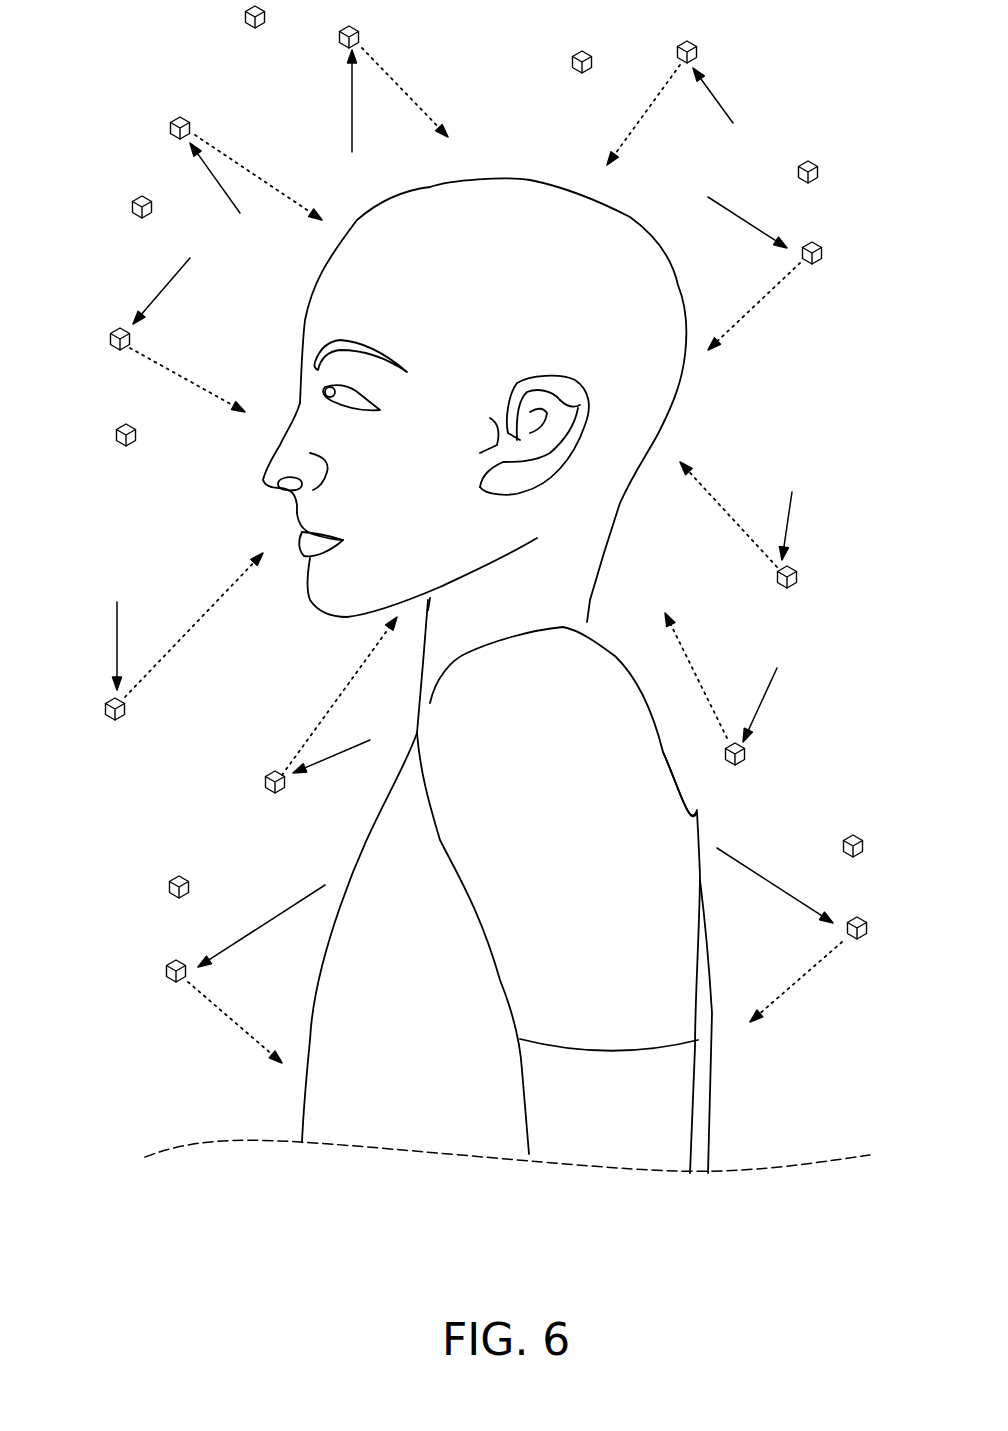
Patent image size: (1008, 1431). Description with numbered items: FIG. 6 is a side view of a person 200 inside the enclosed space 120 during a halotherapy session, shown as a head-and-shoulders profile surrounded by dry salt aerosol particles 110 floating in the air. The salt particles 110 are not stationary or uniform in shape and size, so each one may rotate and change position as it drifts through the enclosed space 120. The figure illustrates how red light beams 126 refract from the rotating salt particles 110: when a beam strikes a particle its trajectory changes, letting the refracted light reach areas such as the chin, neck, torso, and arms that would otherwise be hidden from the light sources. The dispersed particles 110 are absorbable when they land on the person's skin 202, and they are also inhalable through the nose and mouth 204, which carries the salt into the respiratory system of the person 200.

The salt aerosol particles 110 is at (703, 40).
The enclosed space 120 is at (112, 80).
The red light beams 126 is at (778, 222).
The person 200 is at (530, 157).
The person's skin 202 is at (570, 587).
The nose and mouth 204 is at (275, 500).